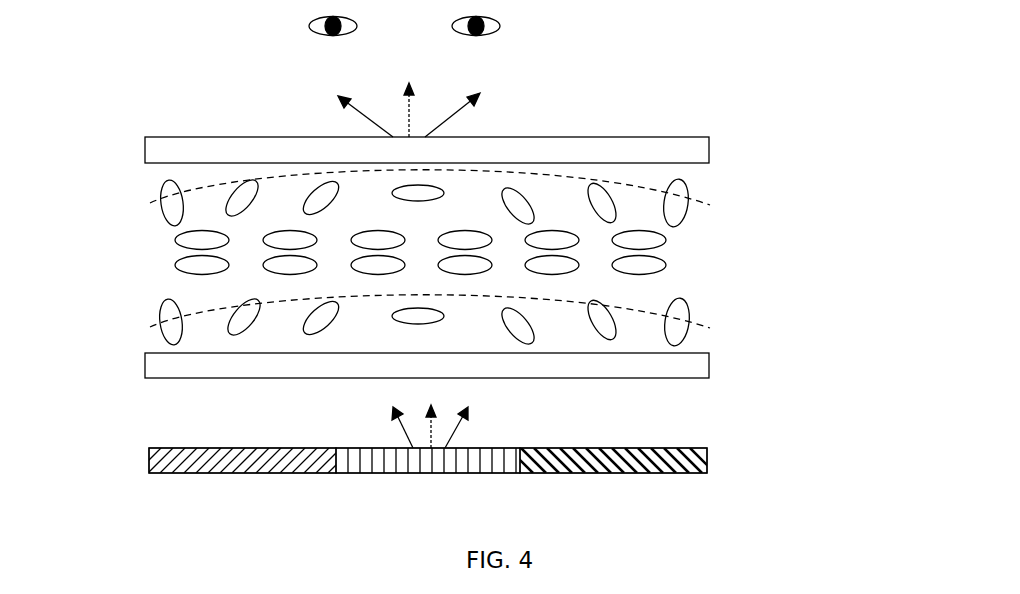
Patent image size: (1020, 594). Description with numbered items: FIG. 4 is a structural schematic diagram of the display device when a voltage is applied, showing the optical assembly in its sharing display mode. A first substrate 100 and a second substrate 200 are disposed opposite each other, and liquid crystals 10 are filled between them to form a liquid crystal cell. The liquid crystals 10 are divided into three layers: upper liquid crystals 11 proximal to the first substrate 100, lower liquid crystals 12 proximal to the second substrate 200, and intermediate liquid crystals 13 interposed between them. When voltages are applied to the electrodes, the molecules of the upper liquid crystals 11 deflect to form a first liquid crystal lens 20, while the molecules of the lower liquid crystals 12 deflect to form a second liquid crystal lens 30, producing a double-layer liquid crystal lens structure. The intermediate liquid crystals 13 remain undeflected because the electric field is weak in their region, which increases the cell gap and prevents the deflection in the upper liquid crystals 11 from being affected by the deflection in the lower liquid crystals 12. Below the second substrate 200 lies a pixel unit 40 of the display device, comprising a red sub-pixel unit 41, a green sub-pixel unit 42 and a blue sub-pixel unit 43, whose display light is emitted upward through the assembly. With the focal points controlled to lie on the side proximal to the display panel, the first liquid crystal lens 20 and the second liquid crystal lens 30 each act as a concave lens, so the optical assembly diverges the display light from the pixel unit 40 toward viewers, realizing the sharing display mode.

The first substrate 100 is at (680, 151).
The second substrate 200 is at (680, 368).
The liquid crystals 10 is at (549, 262).
The upper liquid crystals 11 is at (720, 209).
The lower liquid crystals 12 is at (517, 322).
The intermediate liquid crystals 13 is at (720, 253).
The first liquid crystal lens 20 is at (200, 183).
The second liquid crystal lens 30 is at (227, 305).
The pixel unit 40 is at (507, 492).
The red sub-pixel unit 41 is at (235, 457).
The green sub-pixel unit 42 is at (430, 463).
The blue sub-pixel unit 43 is at (627, 463).